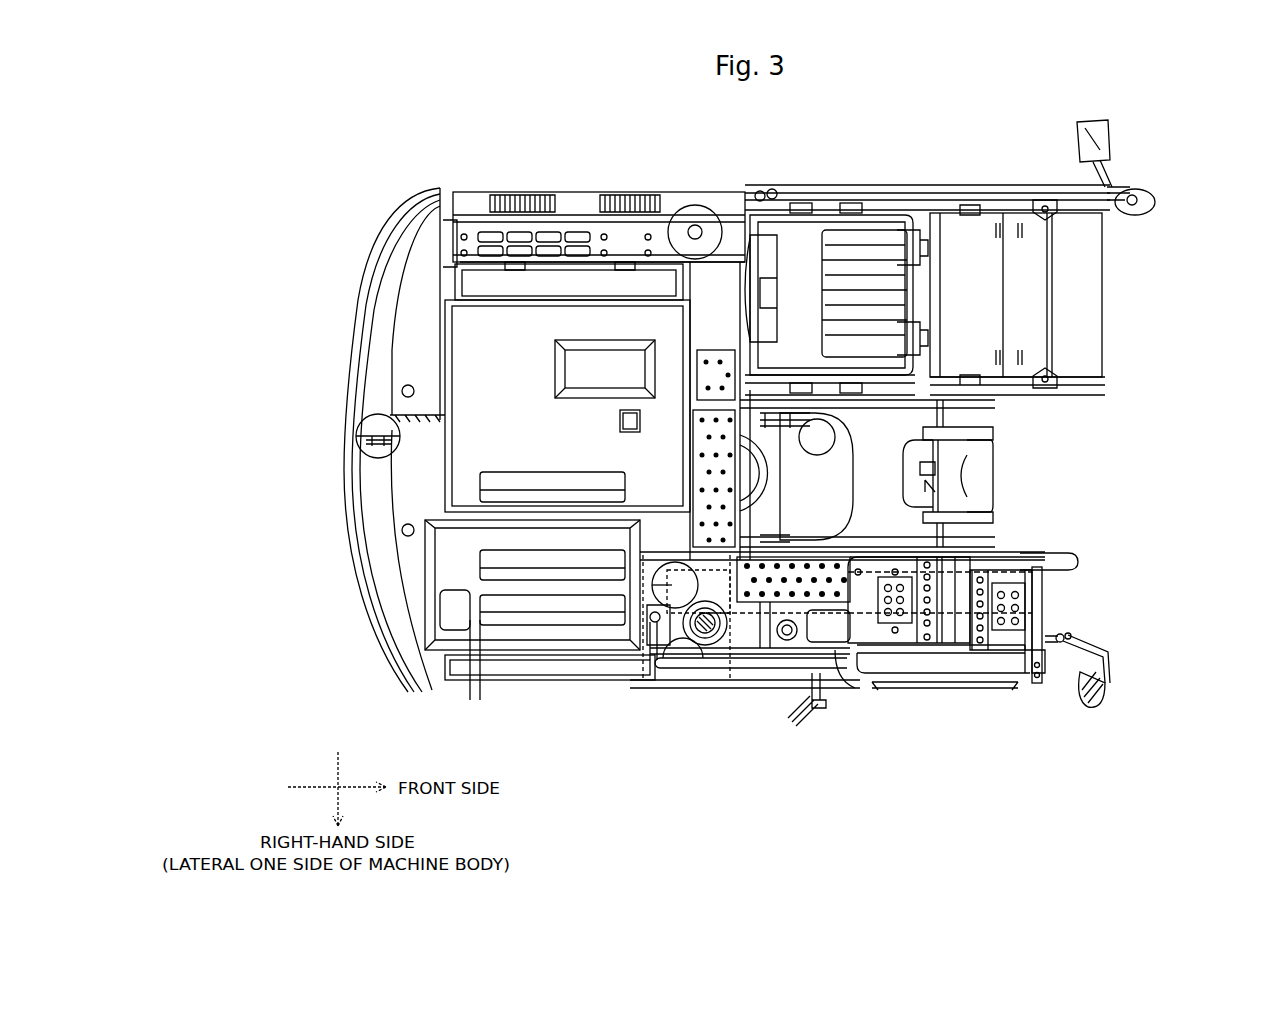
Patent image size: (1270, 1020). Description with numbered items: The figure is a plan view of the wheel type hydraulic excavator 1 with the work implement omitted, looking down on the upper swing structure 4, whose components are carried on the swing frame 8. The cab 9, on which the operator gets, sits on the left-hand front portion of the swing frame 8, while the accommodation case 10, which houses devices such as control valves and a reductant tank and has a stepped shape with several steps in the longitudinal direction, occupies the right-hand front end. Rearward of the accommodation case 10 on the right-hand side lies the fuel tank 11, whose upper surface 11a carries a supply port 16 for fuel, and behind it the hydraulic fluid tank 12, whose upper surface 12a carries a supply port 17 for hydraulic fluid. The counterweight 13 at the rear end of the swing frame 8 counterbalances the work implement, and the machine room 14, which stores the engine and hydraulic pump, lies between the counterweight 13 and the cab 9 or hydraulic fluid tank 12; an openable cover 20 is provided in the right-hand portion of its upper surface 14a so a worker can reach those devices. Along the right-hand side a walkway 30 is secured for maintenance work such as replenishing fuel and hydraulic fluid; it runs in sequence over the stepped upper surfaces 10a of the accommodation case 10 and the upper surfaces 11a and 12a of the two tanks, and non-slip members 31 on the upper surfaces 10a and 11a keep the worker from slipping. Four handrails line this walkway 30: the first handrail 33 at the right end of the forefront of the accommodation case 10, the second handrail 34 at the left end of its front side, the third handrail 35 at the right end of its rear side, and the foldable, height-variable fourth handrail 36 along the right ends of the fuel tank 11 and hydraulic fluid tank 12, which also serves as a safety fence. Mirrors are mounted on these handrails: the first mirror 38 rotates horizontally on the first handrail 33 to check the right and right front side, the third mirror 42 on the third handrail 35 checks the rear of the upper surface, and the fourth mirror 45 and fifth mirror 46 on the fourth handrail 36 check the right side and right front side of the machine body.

The wheel type hydraulic excavator 1 is at (1185, 122).
The upper swing structure 4 is at (372, 245).
The swing frame 8 is at (960, 468).
The cab 9 is at (955, 230).
The accommodation case 10 is at (938, 660).
The upper surfaces of accommodation case 10a is at (893, 660).
The fuel tank 11 is at (748, 668).
The upper surface of fuel tank 11a is at (768, 668).
The hydraulic fluid tank 12 is at (630, 590).
The upper surface of hydraulic fluid tank 12a is at (640, 645).
The counterweight 13 is at (376, 480).
The machine room 14 is at (527, 228).
The upper surface of machine room 14a is at (618, 248).
The supply port 16 is at (830, 680).
The supply port 17 is at (700, 668).
The cover 20 is at (455, 555).
The walkway 30 is at (1035, 577).
The non-slip members 31 is at (790, 578).
The first handrail 33 is at (1050, 648).
The second handrail 34 is at (1077, 562).
The third handrail 35 is at (945, 684).
The fourth handrail 36 is at (632, 670).
The first mirror 38 is at (1093, 697).
The third mirror 42 is at (805, 712).
The fourth mirror 45 is at (690, 662).
The fifth mirror 46 is at (660, 685).